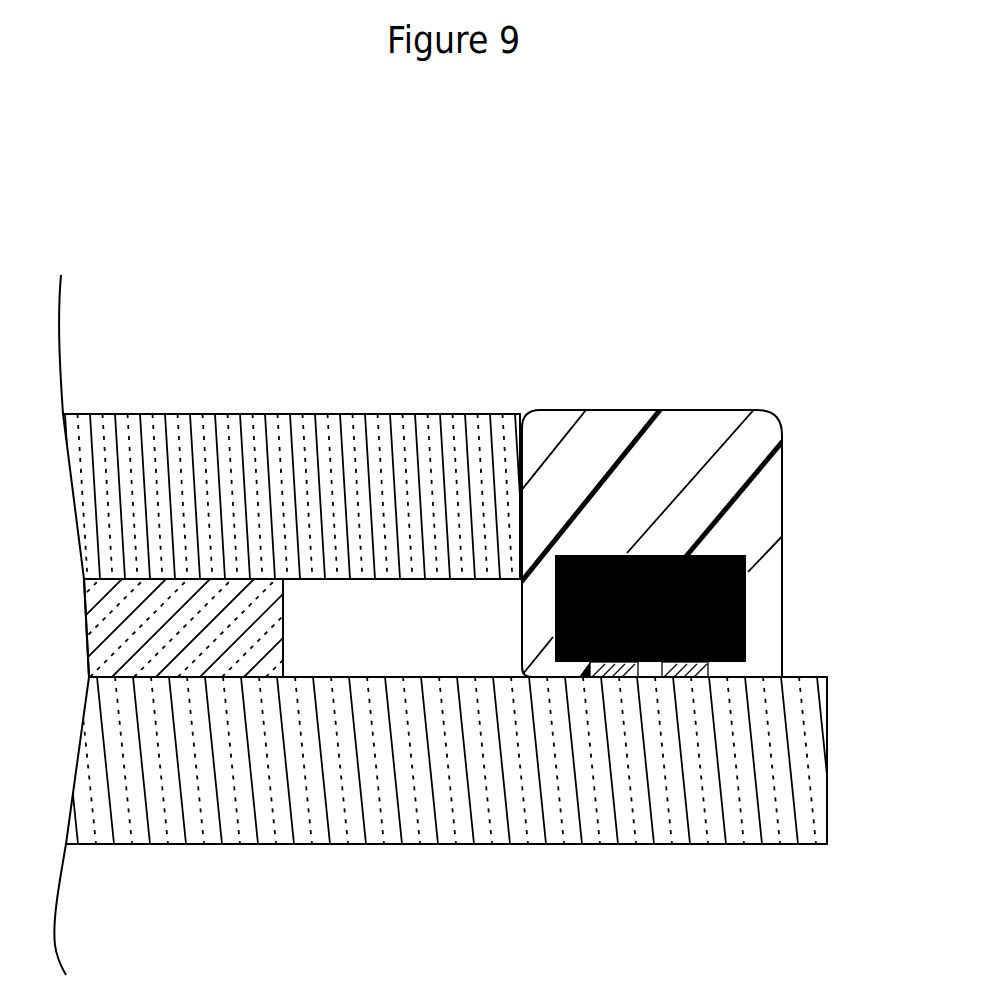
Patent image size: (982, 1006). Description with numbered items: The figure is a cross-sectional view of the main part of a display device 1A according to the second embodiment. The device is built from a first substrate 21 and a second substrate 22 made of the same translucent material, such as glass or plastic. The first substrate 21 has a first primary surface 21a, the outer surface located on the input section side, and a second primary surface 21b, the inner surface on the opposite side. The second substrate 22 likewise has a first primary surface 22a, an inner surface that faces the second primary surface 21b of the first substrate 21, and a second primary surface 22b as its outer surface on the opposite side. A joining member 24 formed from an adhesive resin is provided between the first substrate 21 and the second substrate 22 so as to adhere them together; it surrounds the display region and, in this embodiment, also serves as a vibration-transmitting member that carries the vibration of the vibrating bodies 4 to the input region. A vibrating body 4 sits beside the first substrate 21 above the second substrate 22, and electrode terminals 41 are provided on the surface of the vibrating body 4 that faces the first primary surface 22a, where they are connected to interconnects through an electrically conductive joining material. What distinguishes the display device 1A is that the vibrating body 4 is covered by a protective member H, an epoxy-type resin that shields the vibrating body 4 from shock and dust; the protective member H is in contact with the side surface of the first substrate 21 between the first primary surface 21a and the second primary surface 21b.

The display device 1A is at (522, 183).
The first substrate 21 is at (423, 414).
The first primary surface 21a is at (233, 414).
The second primary surface 21b is at (160, 610).
The second substrate 22 is at (458, 812).
The first primary surface 22a is at (388, 680).
The second primary surface 22b is at (610, 845).
The joining member 24 is at (238, 612).
The protective member H is at (552, 425).
The vibrating body 4 is at (600, 587).
The electrode terminal 41 is at (700, 672).